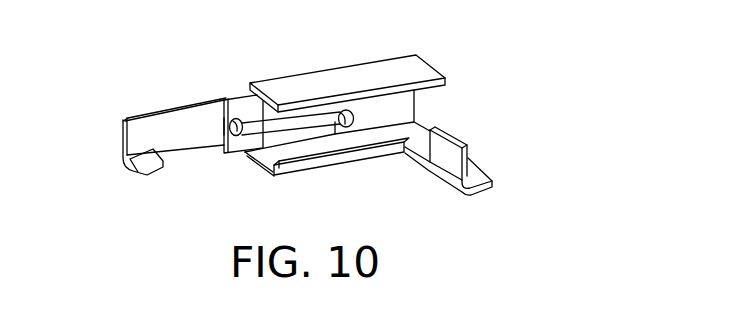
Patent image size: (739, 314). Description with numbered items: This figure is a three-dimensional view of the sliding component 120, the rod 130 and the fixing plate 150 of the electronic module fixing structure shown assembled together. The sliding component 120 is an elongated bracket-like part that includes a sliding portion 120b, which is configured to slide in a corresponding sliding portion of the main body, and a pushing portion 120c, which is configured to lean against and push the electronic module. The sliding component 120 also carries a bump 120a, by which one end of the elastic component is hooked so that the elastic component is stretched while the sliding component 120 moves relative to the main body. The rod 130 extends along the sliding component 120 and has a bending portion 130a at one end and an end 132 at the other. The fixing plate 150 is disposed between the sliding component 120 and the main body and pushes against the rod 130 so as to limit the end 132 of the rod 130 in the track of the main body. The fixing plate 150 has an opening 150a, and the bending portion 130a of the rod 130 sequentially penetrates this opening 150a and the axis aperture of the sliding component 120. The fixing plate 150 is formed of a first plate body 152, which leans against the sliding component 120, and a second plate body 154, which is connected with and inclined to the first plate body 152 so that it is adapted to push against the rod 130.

The sliding component 120 is at (351, 57).
The bump 120a is at (147, 160).
The sliding portion 120b is at (407, 68).
The pushing portion 120c is at (447, 158).
The rod 130 is at (292, 125).
The bending portion 130a is at (240, 134).
The end 132 is at (351, 124).
The fixing plate 150 is at (260, 44).
The opening 150a is at (224, 126).
The first plate body 152 is at (210, 113).
The second plate body 154 is at (256, 112).